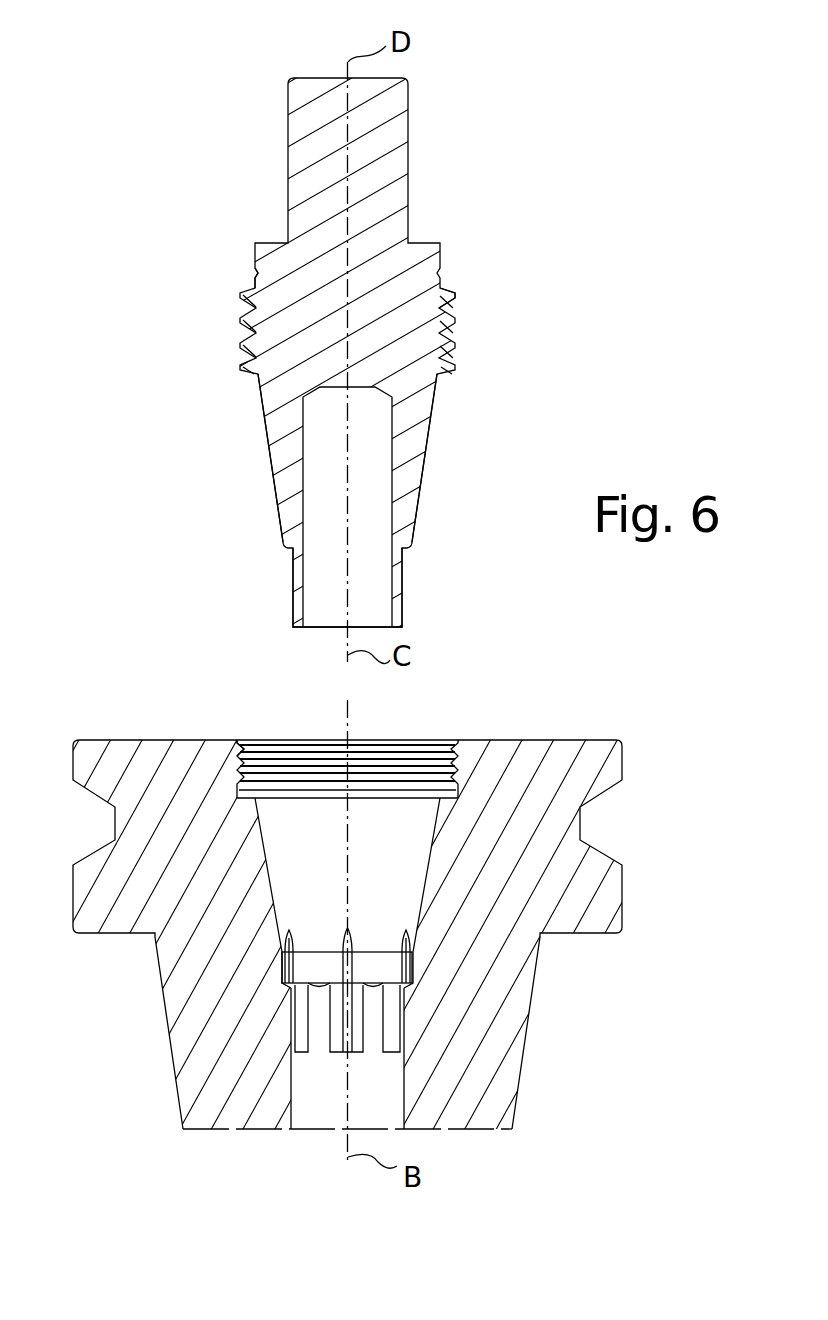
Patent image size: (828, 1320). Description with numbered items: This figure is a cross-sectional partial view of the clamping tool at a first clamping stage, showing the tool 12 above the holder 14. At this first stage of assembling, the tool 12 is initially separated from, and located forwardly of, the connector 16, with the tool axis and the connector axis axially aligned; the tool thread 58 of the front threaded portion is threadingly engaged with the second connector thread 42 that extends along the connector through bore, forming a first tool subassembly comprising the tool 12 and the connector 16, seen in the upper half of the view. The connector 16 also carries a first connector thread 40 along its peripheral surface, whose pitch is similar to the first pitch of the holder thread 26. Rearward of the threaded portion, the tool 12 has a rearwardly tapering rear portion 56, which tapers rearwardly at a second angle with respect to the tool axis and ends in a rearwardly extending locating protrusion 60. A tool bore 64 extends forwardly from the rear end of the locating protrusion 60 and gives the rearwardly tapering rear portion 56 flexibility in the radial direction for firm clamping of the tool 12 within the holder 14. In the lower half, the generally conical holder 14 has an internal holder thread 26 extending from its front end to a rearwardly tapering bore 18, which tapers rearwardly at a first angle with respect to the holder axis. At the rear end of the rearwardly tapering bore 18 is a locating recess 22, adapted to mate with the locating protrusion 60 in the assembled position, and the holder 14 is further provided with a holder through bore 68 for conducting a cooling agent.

The tool 12 is at (468, 105).
The holder 14 is at (581, 708).
The connector 16 is at (462, 345).
The rearwardly tapering bore 18 is at (430, 828).
The locating recess 22 is at (373, 972).
The holder thread 26 is at (247, 757).
The first connector thread 40 is at (238, 311).
The second connector thread 42 is at (265, 376).
The rearwardly tapering rear portion 56 is at (432, 437).
The tool thread 58 is at (458, 317).
The locating protrusion 60 is at (291, 572).
The tool bore 64 is at (320, 608).
The holder through bore 68 is at (308, 1108).